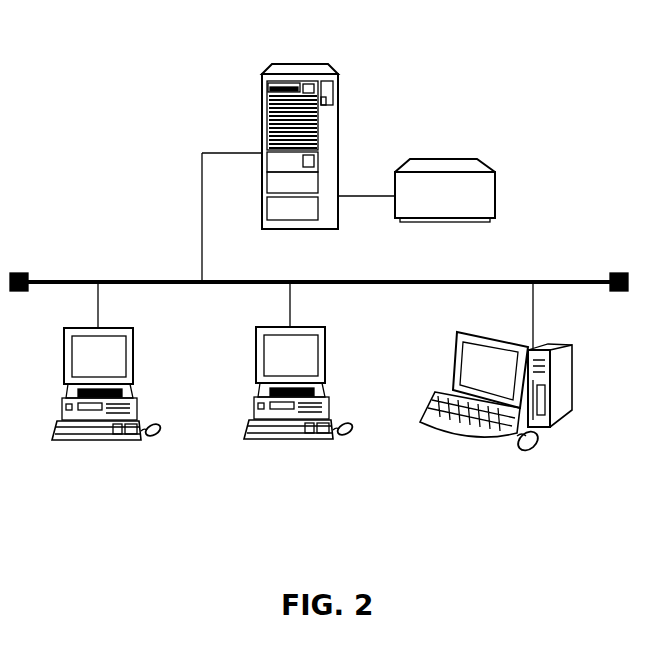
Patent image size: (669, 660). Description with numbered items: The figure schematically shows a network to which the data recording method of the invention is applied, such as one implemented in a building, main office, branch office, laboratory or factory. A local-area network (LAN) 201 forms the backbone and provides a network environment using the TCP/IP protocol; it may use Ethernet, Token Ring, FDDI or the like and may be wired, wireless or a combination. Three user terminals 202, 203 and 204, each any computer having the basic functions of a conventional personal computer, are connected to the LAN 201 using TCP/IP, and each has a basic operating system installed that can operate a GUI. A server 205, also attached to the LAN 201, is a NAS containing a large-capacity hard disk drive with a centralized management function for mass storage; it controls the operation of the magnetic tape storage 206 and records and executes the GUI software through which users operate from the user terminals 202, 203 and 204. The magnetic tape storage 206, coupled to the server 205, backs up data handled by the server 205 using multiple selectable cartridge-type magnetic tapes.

The local-area network (LAN) 201 is at (375, 281).
The user terminal 202 is at (134, 341).
The user terminal 203 is at (324, 342).
The user terminal 204 is at (572, 368).
The server 205 is at (298, 64).
The magnetic tape storage 206 is at (445, 158).